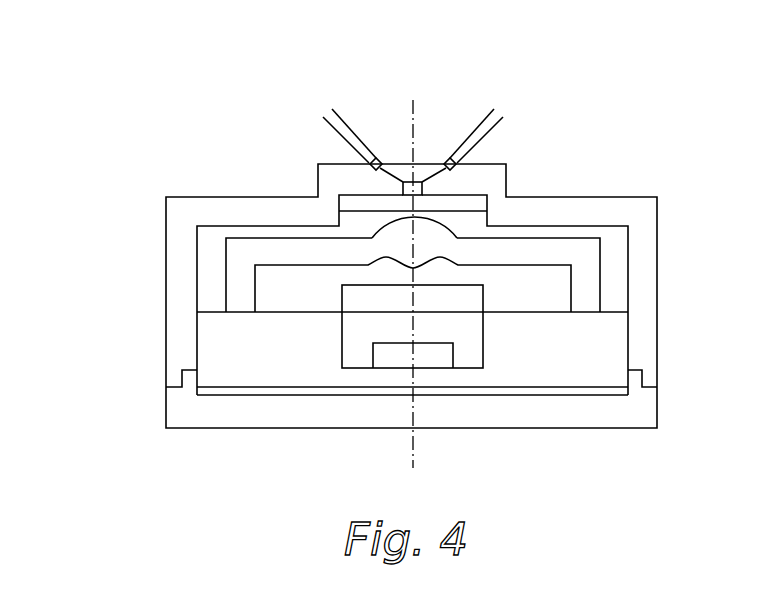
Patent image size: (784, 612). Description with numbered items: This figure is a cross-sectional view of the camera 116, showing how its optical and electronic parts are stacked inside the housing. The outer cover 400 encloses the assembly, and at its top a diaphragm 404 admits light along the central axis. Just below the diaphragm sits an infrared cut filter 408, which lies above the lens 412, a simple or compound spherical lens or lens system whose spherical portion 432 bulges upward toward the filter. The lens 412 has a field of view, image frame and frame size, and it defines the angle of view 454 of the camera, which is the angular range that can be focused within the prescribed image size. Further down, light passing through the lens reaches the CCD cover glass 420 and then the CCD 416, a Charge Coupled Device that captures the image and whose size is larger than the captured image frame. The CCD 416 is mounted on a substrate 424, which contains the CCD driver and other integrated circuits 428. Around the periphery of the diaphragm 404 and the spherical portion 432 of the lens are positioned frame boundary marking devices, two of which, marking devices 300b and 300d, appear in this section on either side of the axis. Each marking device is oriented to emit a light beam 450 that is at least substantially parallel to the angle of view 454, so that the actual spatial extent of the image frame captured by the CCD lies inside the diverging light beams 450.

The cover 400 is at (643, 270).
The camera 116 is at (658, 410).
The infrared cut filter 408 is at (462, 203).
The diaphragm 404 is at (419, 180).
The lens 412 is at (545, 252).
The spherical portion 432 is at (382, 238).
The substrate 424 is at (228, 348).
The integrated circuits 428 is at (257, 395).
The CCD cover glass 420 is at (456, 298).
The CCD 416 is at (388, 355).
The light beam 450 is at (331, 109).
The angle of view 454 is at (358, 140).
The frame boundary marking device 300b is at (366, 163).
The frame boundary marking device 300d is at (460, 163).